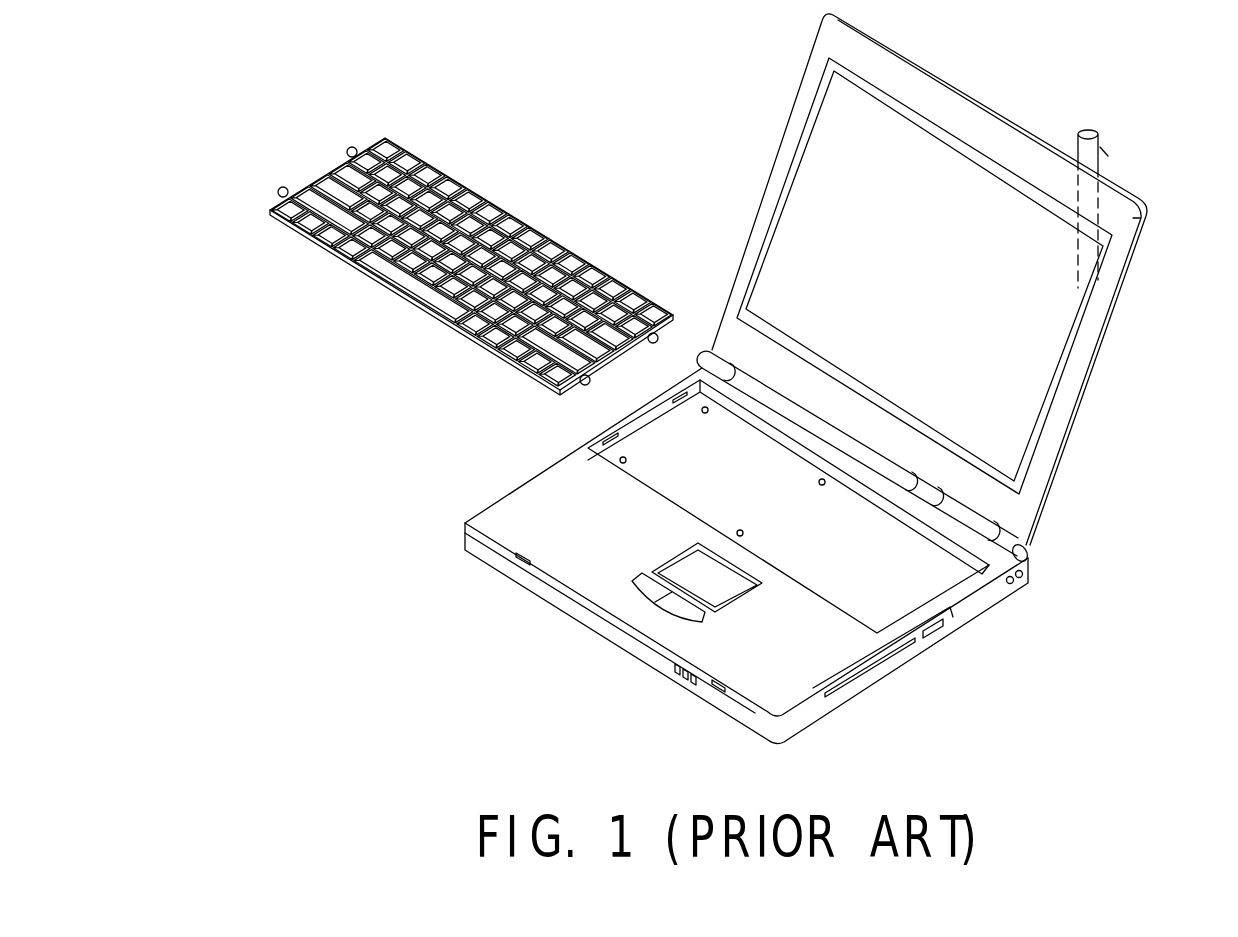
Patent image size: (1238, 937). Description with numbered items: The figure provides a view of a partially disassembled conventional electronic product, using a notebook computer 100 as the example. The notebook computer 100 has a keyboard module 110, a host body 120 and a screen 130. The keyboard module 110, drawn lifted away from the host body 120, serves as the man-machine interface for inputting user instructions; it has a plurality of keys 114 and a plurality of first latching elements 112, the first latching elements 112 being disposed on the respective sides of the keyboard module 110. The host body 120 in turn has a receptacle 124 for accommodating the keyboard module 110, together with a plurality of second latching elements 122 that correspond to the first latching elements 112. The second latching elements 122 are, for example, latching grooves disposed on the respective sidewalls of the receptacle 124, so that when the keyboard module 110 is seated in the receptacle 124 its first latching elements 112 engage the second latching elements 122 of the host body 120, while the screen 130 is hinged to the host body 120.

The notebook computer 100 is at (908, 758).
The keyboard module 110 is at (548, 77).
The first latching elements 112 is at (351, 150).
The keys 114 is at (468, 195).
The host body 120 is at (440, 395).
The second latching elements 122 is at (610, 445).
The receptacle 124 is at (697, 457).
The screen 130 is at (1043, 363).